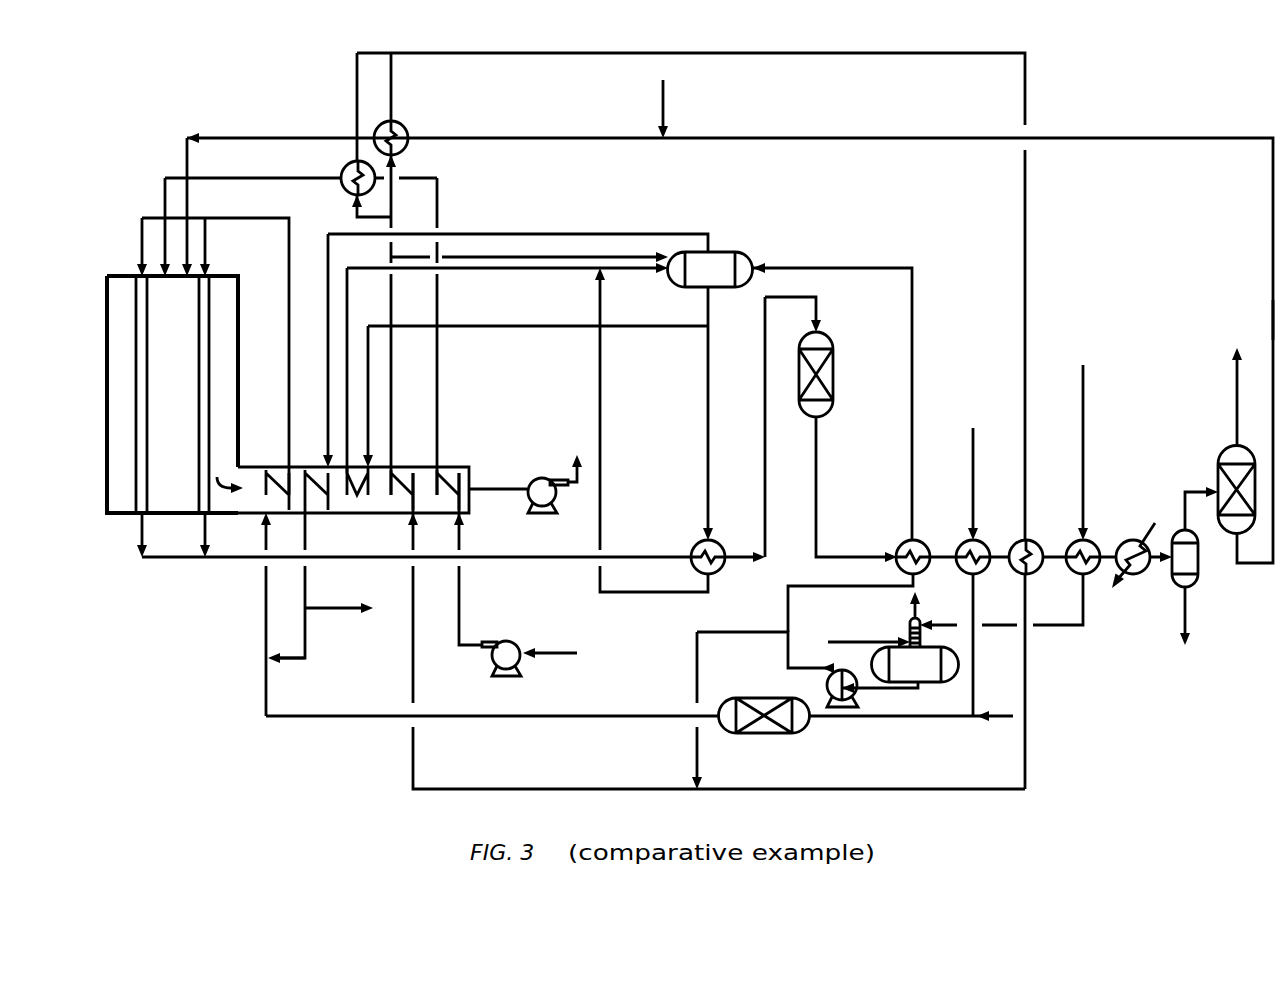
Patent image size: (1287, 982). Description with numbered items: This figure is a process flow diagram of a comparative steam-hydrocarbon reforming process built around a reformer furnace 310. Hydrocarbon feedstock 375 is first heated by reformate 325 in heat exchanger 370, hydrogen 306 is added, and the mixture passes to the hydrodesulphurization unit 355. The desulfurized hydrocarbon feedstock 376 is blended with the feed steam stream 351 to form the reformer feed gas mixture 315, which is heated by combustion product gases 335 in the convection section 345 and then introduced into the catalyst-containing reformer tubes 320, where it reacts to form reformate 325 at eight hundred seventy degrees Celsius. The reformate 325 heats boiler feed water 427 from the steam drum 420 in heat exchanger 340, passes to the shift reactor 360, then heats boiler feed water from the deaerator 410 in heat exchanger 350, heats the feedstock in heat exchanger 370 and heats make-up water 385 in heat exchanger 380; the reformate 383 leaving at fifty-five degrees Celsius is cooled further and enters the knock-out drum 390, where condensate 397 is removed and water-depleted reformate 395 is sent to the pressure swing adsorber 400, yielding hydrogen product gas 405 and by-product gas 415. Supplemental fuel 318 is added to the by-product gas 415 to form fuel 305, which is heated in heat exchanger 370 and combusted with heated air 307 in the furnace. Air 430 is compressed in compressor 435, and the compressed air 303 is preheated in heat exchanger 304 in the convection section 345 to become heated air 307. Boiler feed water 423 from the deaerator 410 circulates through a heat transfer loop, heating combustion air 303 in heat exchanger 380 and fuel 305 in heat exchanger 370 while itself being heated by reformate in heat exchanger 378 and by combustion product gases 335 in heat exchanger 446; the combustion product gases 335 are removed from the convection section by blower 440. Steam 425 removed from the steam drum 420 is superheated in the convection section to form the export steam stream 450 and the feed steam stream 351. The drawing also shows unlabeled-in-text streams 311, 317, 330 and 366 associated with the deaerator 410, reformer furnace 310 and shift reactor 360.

The compressed air 303 is at (460, 572).
The heat exchanger 304 is at (448, 460).
The fuel 305 is at (190, 245).
The hydrogen 306 is at (1000, 723).
The heated air 307 is at (437, 303).
The reformer furnace 310 is at (107, 325).
The stream line 311 is at (867, 642).
The reformer feed gas mixture 315 is at (253, 215).
The vent stream 317 is at (910, 600).
The supplemental fuel 318 is at (660, 108).
The catalyst-containing reformer tubes 320 is at (136, 385).
The reformate 325 is at (235, 562).
The reactor internal 330 is at (165, 426).
The combustion product gases 335 is at (217, 513).
The heat exchanger 340 is at (695, 545).
The convection section 345 is at (337, 500).
The heat exchanger 350 is at (898, 545).
The feed steam stream 351 is at (317, 653).
The hydrodesulphurization unit 355 is at (777, 735).
The shift reactor 360 is at (840, 315).
The stream line 366 is at (817, 483).
The heat exchanger 370 is at (399, 122).
The hydrocarbon feedstock 375 is at (975, 478).
The desulfurized hydrocarbon feedstock 376 is at (322, 717).
The heat exchanger 378 is at (1015, 540).
The heat exchanger 380 is at (341, 170).
The reformate 383 is at (1110, 550).
The make-up water 385 is at (1085, 440).
The knock-out drum 390 is at (1198, 565).
The water-depleted reformate 395 is at (1185, 488).
The condensate 397 is at (1188, 625).
The pressure swing adsorber 400 is at (1225, 447).
The hydrogen product gas 405 is at (1237, 395).
The deaerator 410 is at (915, 664).
The by-product gas 415 is at (1275, 323).
The steam drum 420 is at (740, 253).
The boiler feed water 423 is at (914, 325).
The steam 425 is at (547, 234).
The boiler feed water 427 is at (708, 312).
The air 430 is at (545, 655).
The compressor 435 is at (488, 660).
The blower 440 is at (543, 478).
The heat exchanger 446 is at (402, 460).
The export steam stream 450 is at (343, 595).